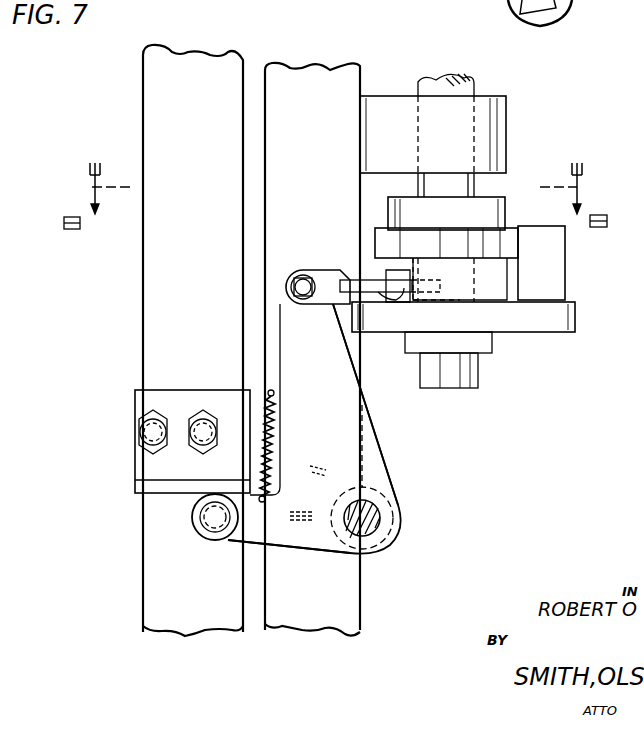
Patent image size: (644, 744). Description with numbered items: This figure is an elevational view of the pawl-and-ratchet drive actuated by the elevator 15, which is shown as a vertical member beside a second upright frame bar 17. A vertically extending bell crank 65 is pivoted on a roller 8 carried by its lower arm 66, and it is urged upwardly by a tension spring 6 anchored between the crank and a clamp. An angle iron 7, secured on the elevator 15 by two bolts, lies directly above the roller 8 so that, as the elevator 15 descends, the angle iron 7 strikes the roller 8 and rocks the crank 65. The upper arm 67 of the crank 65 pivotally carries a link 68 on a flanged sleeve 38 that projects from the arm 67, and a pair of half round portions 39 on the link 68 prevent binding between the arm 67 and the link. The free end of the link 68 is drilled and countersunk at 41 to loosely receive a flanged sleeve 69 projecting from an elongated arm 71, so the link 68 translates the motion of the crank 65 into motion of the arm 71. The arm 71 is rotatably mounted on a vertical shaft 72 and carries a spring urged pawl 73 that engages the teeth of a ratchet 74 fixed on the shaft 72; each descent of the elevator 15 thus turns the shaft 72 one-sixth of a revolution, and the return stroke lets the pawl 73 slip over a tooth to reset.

The tension spring 6 is at (275, 428).
The angle iron 7 is at (150, 467).
The roller 8 is at (195, 532).
The elevator 15 is at (160, 290).
The frame bar 17 is at (318, 76).
The flanged sleeve 38 is at (292, 277).
The half round portions 39 is at (303, 272).
The countersunk opening 41 is at (385, 285).
The bell crank 65 is at (383, 470).
The arm of bell crank 66 is at (290, 540).
The arm of bell crank 67 is at (345, 428).
The link 68 is at (345, 270).
The flanged sleeve 69 is at (390, 322).
The elongated arm 71 is at (525, 325).
The vertical shaft 72 is at (470, 82).
The spring urged pawl 73 is at (490, 232).
The ratchet 74 is at (378, 243).